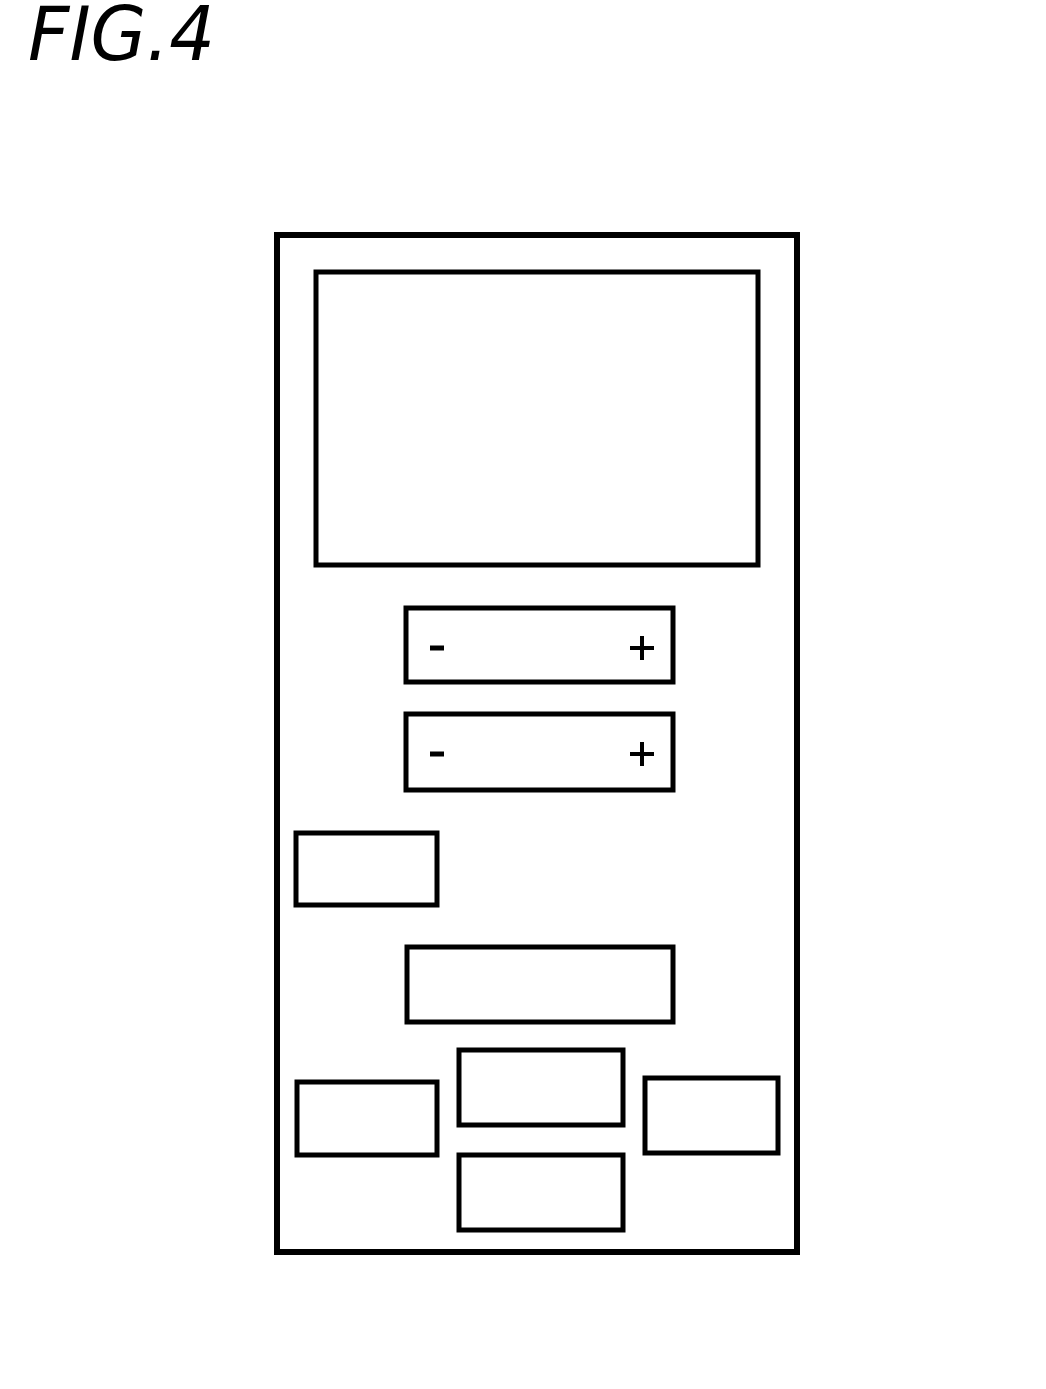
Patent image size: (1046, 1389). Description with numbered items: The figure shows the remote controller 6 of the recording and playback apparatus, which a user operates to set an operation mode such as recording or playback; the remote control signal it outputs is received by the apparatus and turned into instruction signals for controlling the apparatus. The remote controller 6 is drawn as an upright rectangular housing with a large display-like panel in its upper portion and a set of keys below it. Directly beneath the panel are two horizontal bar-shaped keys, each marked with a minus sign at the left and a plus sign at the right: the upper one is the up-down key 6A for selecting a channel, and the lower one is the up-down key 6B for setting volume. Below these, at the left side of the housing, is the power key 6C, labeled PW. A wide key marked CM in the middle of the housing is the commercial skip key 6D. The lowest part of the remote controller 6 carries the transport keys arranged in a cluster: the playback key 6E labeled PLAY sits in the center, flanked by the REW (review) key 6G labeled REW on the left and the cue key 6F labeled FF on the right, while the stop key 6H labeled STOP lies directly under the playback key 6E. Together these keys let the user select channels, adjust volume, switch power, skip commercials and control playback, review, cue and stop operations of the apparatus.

The remote controller 6 is at (277, 372).
The up-down key 6A is at (674, 645).
The up-down key 6B is at (674, 752).
The power key 6C is at (296, 871).
The commercial skip key 6D is at (674, 985).
The playback key 6E is at (459, 1063).
The cue key 6F is at (779, 1115).
The REW (review) key 6G is at (297, 1120).
The stop key 6H is at (573, 1230).